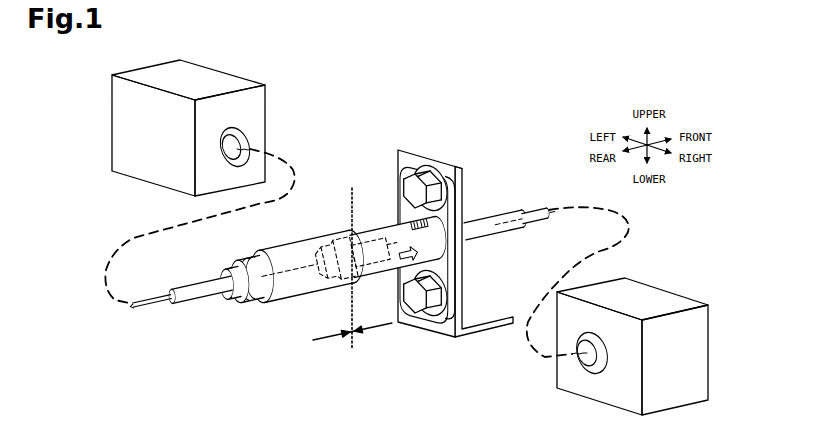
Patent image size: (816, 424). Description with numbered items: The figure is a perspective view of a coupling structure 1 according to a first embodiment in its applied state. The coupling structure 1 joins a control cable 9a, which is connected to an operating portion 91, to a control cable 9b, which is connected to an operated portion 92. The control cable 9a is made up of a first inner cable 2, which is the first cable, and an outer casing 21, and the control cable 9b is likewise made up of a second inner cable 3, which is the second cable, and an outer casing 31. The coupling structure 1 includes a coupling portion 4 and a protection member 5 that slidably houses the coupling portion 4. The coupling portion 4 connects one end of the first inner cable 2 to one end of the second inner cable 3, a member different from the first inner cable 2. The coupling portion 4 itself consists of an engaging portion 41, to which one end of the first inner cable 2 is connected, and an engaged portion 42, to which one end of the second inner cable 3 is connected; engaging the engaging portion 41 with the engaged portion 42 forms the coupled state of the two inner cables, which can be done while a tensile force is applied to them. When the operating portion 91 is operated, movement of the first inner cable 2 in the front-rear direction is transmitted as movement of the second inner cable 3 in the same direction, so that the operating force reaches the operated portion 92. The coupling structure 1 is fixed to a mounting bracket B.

The coupling structure 1 is at (345, 245).
The first inner cable 2 is at (158, 300).
The outer casing 21 is at (205, 293).
The second inner cable 3 is at (393, 242).
The outer casing 31 is at (498, 228).
The coupling portion 4 is at (356, 266).
The engaging portion 41 is at (340, 273).
The engaged portion 42 is at (370, 260).
The protection member 5 is at (290, 255).
The control cable 9a is at (116, 252).
The control cable 9b is at (630, 224).
The operating portion 91 is at (120, 130).
The operated portion 92 is at (662, 297).
The mounting bracket B is at (462, 177).